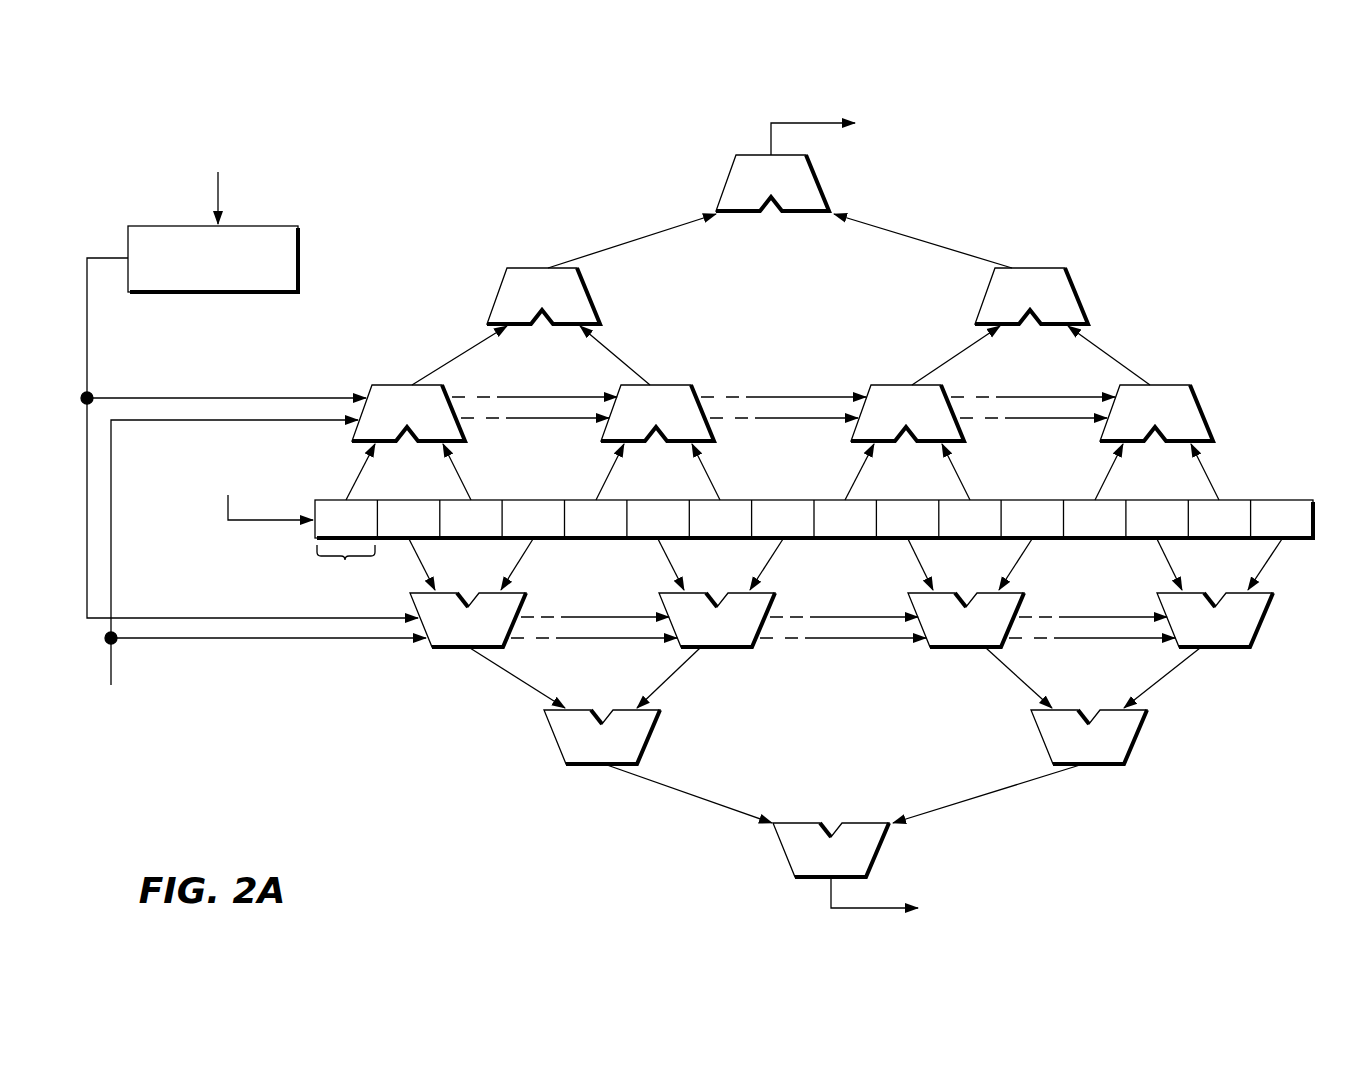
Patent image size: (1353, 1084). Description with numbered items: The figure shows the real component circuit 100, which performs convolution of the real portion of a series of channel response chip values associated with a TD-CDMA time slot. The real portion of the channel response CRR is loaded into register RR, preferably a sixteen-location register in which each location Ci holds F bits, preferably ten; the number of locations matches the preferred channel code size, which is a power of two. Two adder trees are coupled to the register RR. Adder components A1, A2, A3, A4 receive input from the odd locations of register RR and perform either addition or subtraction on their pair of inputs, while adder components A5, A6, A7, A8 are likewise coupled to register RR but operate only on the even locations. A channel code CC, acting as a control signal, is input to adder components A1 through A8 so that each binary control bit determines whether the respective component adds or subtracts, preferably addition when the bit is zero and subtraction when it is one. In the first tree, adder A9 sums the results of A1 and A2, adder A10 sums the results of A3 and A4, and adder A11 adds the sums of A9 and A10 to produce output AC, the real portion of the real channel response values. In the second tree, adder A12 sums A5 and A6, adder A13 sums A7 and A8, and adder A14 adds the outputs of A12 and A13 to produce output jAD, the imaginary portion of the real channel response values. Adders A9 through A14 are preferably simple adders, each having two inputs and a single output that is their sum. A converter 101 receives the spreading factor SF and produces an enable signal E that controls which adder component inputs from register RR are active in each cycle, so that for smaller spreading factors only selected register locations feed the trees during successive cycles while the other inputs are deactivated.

The real component circuit 100 is at (344, 122).
The converter 101 is at (298, 228).
The spreading factor SF is at (218, 184).
The enable signal E is at (87, 333).
The channel code CC is at (112, 665).
The real portion of the channel response CRR is at (228, 528).
The register RR is at (1293, 499).
The register location Ci is at (346, 569).
The adder component A1 is at (450, 650).
The adder component A2 is at (748, 650).
The adder component A3 is at (987, 650).
The adder component A4 is at (1258, 645).
The adder component A5 is at (392, 385).
The adder component A6 is at (682, 385).
The adder component A7 is at (880, 385).
The adder component A8 is at (1181, 384).
The adder A9 is at (563, 752).
The adder A10 is at (1135, 748).
The adder A11 is at (785, 850).
The adder A12 is at (527, 268).
The adder A13 is at (1050, 268).
The adder A14 is at (727, 183).
The output jAD is at (771, 122).
The output AC is at (830, 898).